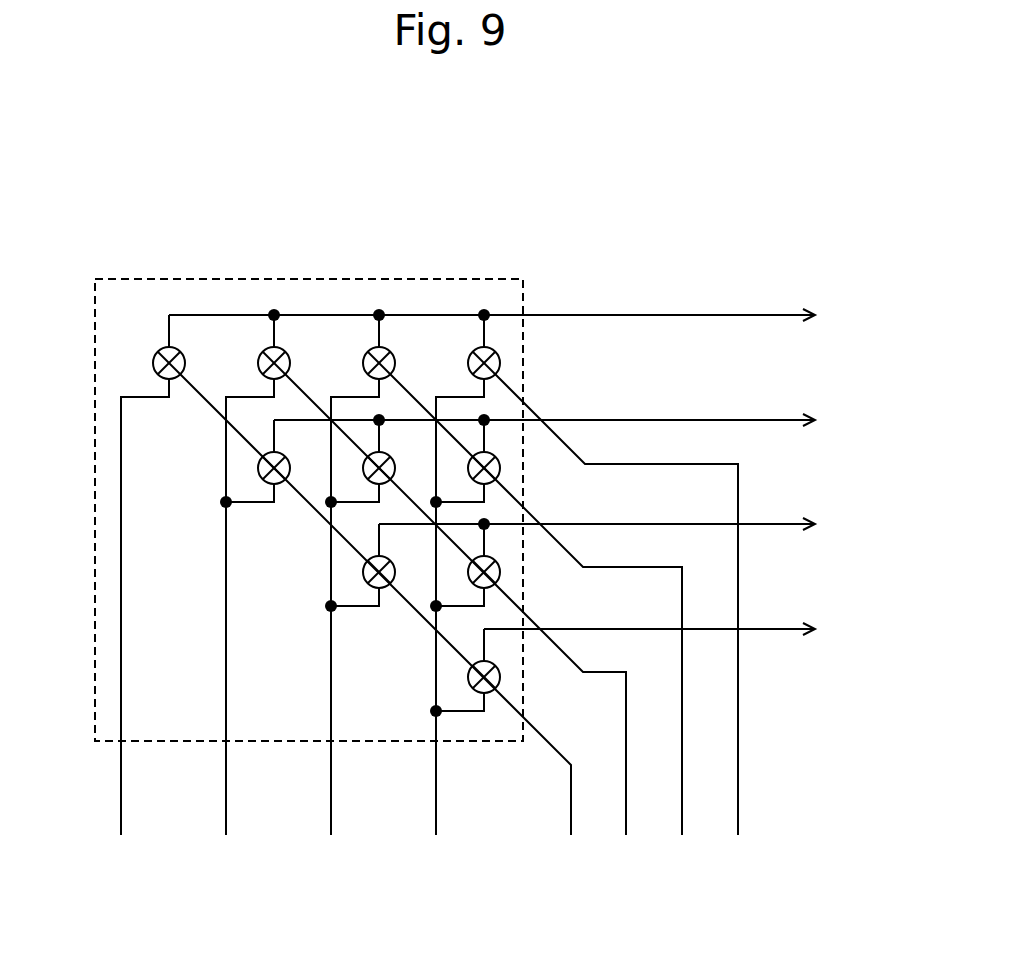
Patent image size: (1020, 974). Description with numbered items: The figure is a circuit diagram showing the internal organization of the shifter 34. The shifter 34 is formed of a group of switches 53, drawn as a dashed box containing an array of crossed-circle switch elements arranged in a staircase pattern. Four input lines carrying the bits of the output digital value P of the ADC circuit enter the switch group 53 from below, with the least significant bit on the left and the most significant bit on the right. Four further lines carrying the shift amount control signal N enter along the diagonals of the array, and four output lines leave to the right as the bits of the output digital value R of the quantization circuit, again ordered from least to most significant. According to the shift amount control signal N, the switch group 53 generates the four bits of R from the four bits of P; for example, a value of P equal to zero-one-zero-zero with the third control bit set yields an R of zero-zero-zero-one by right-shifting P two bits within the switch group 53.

The shifter 34 is at (158, 169).
The switch group 53 is at (476, 279).
The output digital value of the ADC circuit P is at (120, 875).
The shift amount control signal N is at (571, 875).
The output digital value of the quantization circuit R is at (865, 325).